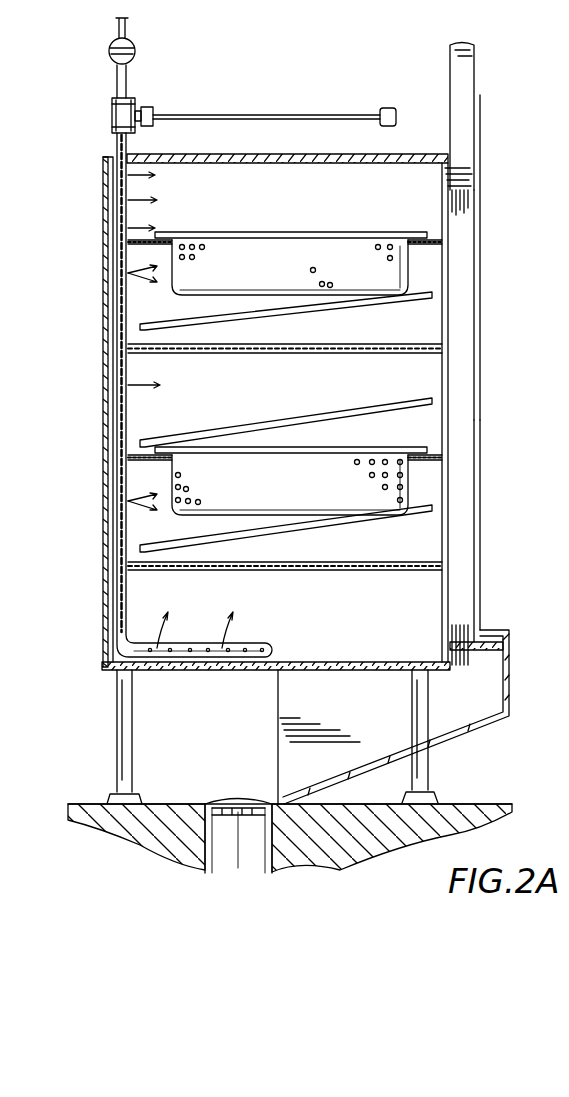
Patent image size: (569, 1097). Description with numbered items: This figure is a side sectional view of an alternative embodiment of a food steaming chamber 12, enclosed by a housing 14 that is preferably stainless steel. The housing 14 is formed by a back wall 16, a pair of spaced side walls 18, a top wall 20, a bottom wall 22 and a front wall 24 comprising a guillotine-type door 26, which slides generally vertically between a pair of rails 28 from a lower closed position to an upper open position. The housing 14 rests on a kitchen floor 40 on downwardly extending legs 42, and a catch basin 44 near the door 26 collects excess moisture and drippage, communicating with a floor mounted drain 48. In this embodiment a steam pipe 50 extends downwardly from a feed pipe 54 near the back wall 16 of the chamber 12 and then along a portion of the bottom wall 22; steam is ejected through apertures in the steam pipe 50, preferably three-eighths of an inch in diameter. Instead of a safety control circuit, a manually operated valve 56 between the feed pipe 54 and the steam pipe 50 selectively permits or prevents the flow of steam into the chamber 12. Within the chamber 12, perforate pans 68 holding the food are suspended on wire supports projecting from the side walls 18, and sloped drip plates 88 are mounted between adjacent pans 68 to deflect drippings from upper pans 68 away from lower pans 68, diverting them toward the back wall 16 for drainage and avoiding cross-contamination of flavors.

The food steaming chamber 12 is at (238, 392).
The housing 14 is at (412, 143).
The back wall 16 is at (103, 262).
The side walls 18 is at (360, 605).
The top wall 20 is at (238, 160).
The bottom wall 22 is at (326, 660).
The front wall 24 is at (452, 352).
The guillotine-type door 26 is at (468, 124).
The rails 28 is at (468, 508).
The kitchen floor 40 is at (486, 806).
The legs 42 is at (134, 722).
The catch basin 44 is at (510, 676).
The floor mounted drain 48 is at (248, 845).
The steam pipe 50 is at (117, 142).
The feed pipe 54 is at (136, 48).
The manually operated valve 56 is at (112, 112).
The perforate pans 68 is at (357, 280).
The sloped drip plates 88 is at (372, 305).